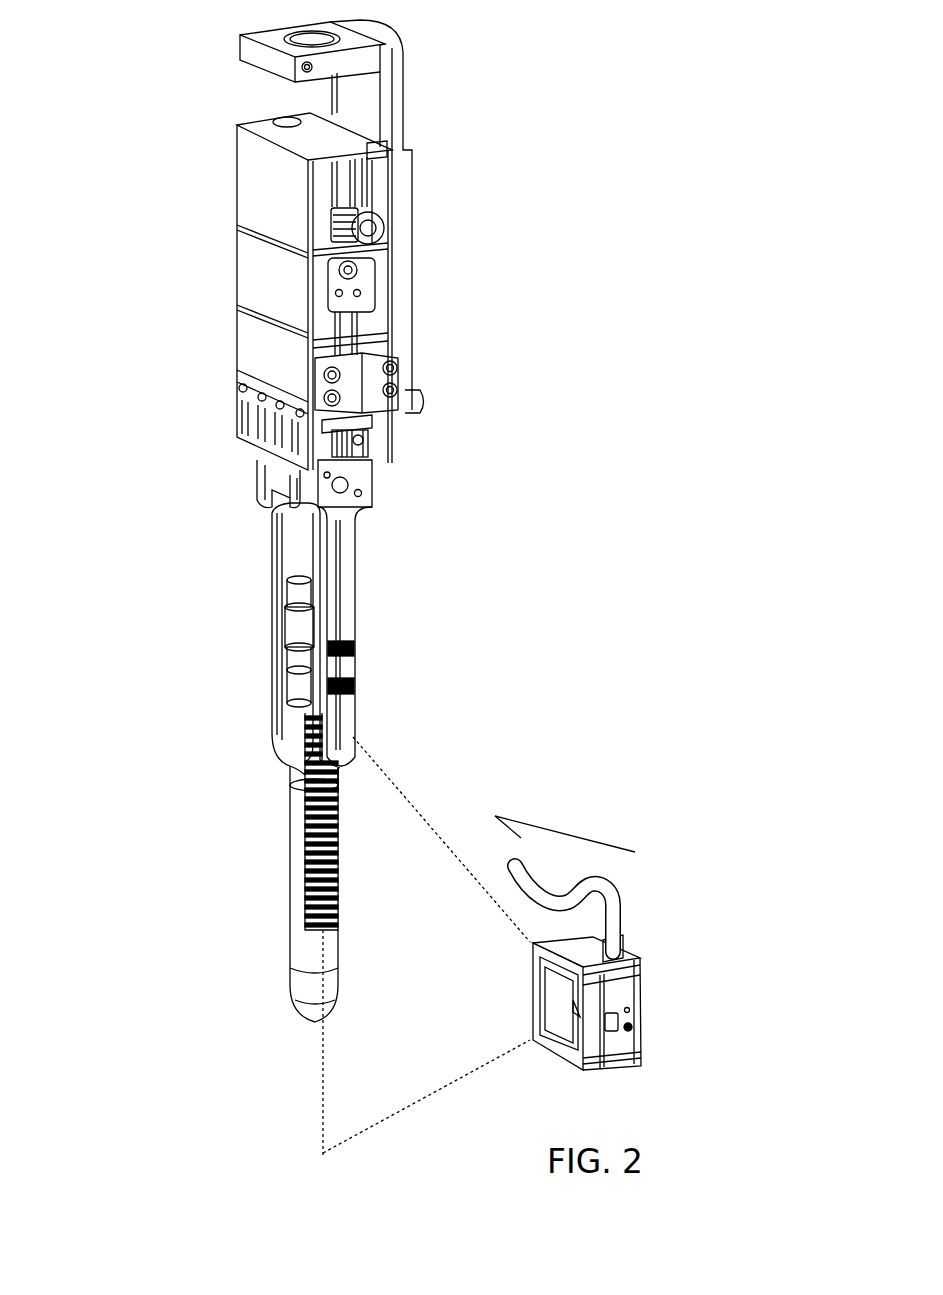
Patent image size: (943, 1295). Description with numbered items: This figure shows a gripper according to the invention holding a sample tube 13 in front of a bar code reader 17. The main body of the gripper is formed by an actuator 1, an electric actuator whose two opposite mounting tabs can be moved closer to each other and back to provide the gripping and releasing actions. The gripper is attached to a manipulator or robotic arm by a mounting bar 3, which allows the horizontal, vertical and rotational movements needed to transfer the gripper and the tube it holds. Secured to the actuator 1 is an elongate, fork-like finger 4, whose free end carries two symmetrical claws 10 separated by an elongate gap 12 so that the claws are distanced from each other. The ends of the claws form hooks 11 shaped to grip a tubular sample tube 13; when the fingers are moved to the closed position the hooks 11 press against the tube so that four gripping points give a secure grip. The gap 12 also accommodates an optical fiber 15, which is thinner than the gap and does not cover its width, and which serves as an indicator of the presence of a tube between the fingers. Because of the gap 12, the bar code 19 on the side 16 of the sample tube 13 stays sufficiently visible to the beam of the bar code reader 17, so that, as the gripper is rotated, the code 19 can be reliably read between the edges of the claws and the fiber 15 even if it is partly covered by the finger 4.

The actuator 1 is at (260, 283).
The mounting bar 3 is at (393, 75).
The finger 4 is at (353, 593).
The claws 10 is at (310, 718).
The hooks 11 is at (307, 773).
The gap 12 is at (353, 755).
The sample tube 13 is at (303, 947).
The optical fiber 15 is at (353, 653).
The side 16 is at (587, 844).
The bar code reader 17 is at (642, 968).
The bar code 19 is at (303, 863).